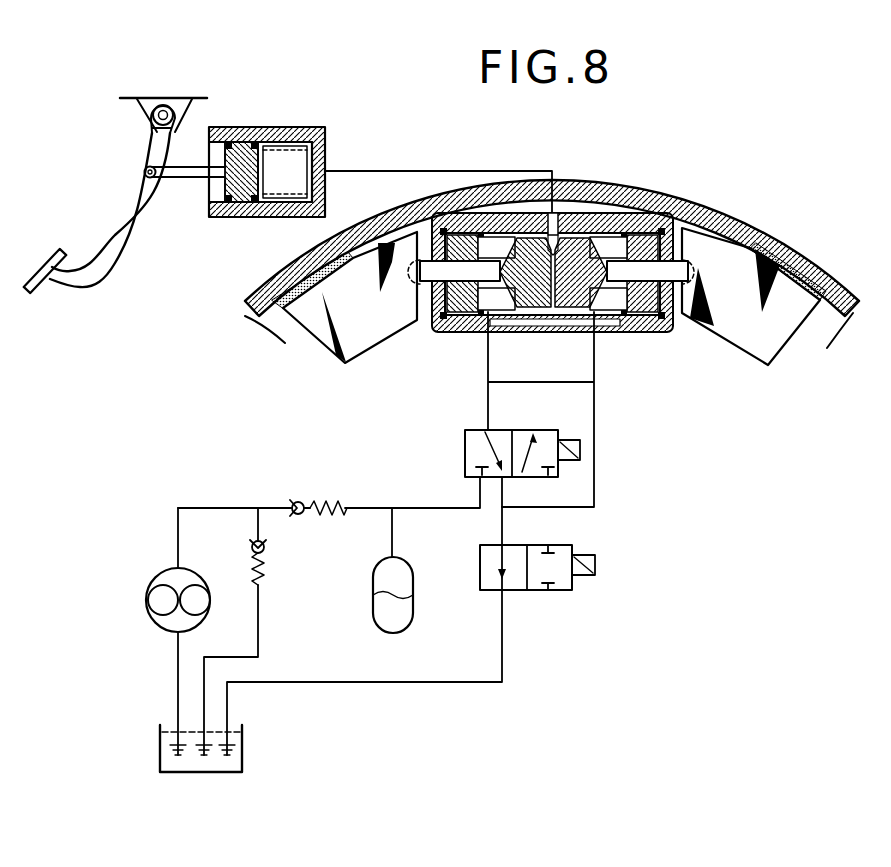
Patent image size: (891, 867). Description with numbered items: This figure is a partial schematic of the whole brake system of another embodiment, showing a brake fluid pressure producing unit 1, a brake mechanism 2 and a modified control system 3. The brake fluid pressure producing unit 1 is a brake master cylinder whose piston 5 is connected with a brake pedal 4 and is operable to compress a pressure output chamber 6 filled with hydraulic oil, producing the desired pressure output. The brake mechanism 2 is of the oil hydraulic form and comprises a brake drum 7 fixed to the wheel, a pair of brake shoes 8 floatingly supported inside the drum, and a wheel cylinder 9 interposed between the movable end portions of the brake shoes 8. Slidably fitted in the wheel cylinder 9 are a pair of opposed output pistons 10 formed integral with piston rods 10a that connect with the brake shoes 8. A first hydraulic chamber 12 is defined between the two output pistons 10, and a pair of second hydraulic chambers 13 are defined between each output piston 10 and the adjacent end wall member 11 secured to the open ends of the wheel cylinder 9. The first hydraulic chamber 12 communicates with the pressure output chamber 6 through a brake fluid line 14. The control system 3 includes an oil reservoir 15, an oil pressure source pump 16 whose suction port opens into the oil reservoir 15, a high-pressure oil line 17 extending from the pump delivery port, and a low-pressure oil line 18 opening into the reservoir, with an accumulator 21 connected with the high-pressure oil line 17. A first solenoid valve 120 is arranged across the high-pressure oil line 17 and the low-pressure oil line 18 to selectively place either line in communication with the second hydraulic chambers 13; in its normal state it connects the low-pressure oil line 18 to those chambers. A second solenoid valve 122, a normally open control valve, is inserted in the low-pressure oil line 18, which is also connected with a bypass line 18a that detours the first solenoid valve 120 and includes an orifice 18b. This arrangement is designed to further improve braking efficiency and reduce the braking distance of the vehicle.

The brake fluid pressure producing unit 1 is at (267, 163).
The brake mechanism 2 is at (552, 250).
The control system 3 is at (401, 542).
The brake pedal 4 is at (56, 258).
The piston 5 is at (251, 203).
The pressure output chamber 6 is at (291, 192).
The brake drum 7 is at (736, 220).
The brake shoes 8 is at (362, 345).
The wheel cylinder 9 is at (572, 214).
The output pistons 10 is at (538, 312).
The piston rods 10a is at (423, 286).
The end wall members 11 is at (471, 318).
The first hydraulic chamber 12 is at (553, 312).
The second hydraulic chambers 13 is at (503, 315).
The brake fluid line 14 is at (438, 170).
The oil reservoir 15 is at (243, 746).
The oil pressure source pump 16 is at (196, 571).
The high-pressure oil line 17 is at (403, 507).
The low-pressure oil line 18 is at (502, 645).
The bypass line 18a is at (596, 407).
The orifice 18b is at (584, 442).
The accumulator 21 is at (372, 602).
The first solenoid valve 120 is at (561, 434).
The second solenoid valve 122 is at (548, 591).